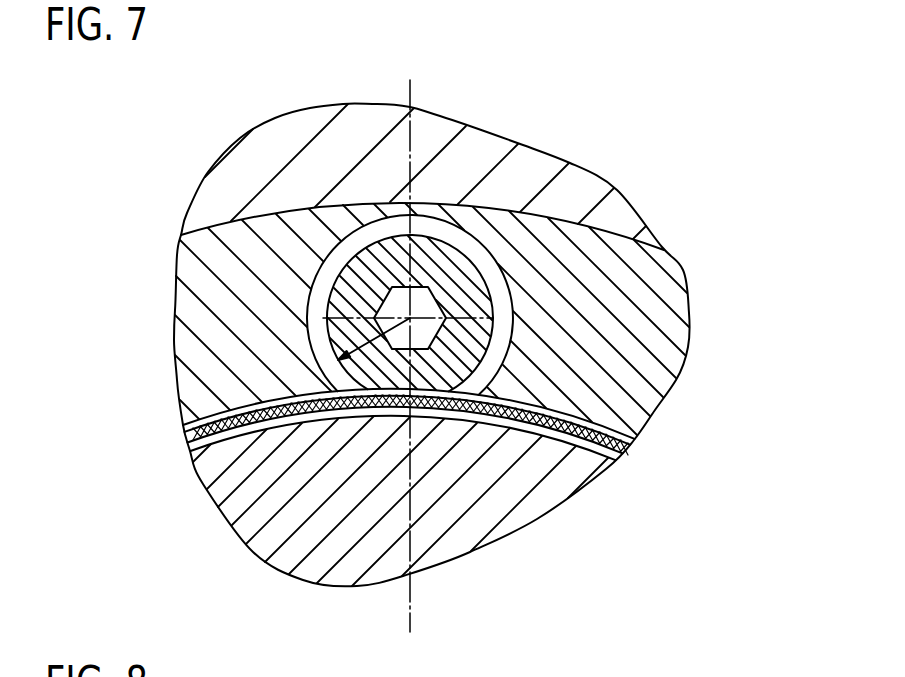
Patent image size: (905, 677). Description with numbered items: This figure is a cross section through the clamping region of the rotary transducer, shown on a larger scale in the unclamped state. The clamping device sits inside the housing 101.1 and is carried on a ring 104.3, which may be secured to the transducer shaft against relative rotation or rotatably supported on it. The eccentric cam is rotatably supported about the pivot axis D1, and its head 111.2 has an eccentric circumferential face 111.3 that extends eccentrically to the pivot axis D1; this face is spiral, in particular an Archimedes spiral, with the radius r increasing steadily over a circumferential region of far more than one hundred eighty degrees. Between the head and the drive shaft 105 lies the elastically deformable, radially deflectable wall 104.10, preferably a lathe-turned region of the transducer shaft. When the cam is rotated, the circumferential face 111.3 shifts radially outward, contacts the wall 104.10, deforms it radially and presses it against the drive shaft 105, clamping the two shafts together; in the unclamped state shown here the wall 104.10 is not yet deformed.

The housing 101.1 is at (600, 213).
The ring 104.3 is at (617, 343).
The elastically deformable and radially deflectable wall 104.10 is at (630, 443).
The drive shaft 105 is at (530, 473).
The head 111.2 is at (433, 263).
The eccentric circumferential face 111.3 is at (482, 255).
The pivot axis D1 is at (380, 267).
The radius r is at (374, 339).